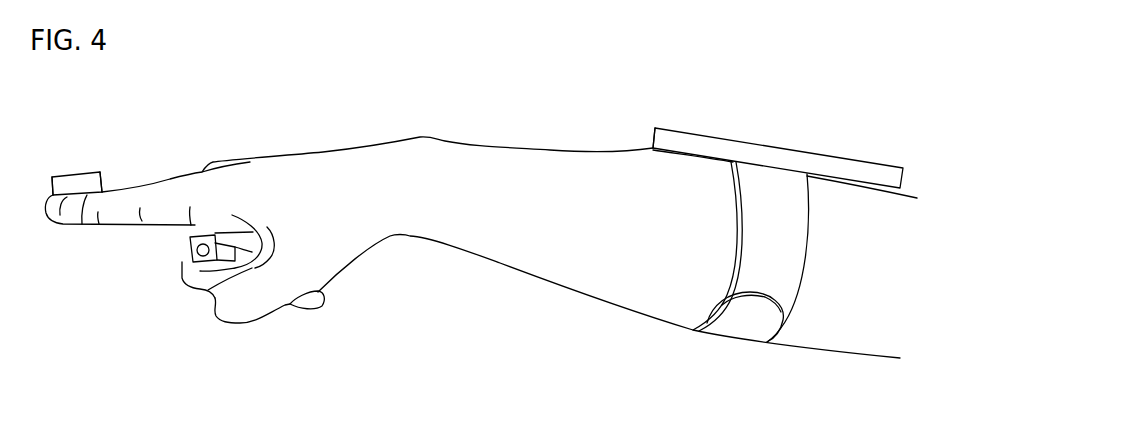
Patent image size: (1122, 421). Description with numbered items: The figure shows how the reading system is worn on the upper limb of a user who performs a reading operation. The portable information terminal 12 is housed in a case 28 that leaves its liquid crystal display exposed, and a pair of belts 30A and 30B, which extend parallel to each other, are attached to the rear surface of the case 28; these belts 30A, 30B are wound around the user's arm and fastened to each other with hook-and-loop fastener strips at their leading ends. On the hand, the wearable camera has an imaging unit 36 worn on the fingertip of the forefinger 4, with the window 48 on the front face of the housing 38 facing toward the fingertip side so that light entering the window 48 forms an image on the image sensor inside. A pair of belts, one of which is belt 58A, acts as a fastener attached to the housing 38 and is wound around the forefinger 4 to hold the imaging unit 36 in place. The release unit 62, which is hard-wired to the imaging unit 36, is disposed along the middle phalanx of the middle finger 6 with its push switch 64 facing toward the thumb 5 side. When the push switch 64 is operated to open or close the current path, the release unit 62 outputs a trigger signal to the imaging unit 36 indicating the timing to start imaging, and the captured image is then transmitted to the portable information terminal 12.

The forefinger 4 is at (138, 188).
The thumb 5 is at (247, 319).
The middle finger 6 is at (195, 279).
The portable information terminal 12 is at (797, 141).
The case 28 is at (652, 146).
The belt 30A is at (798, 257).
The belt 30B is at (746, 331).
The imaging unit 36 is at (77, 168).
The housing 38 is at (101, 172).
The window 48 is at (50, 188).
The belt 58A is at (80, 226).
The release unit 62 is at (182, 253).
The push switch 64 is at (195, 236).